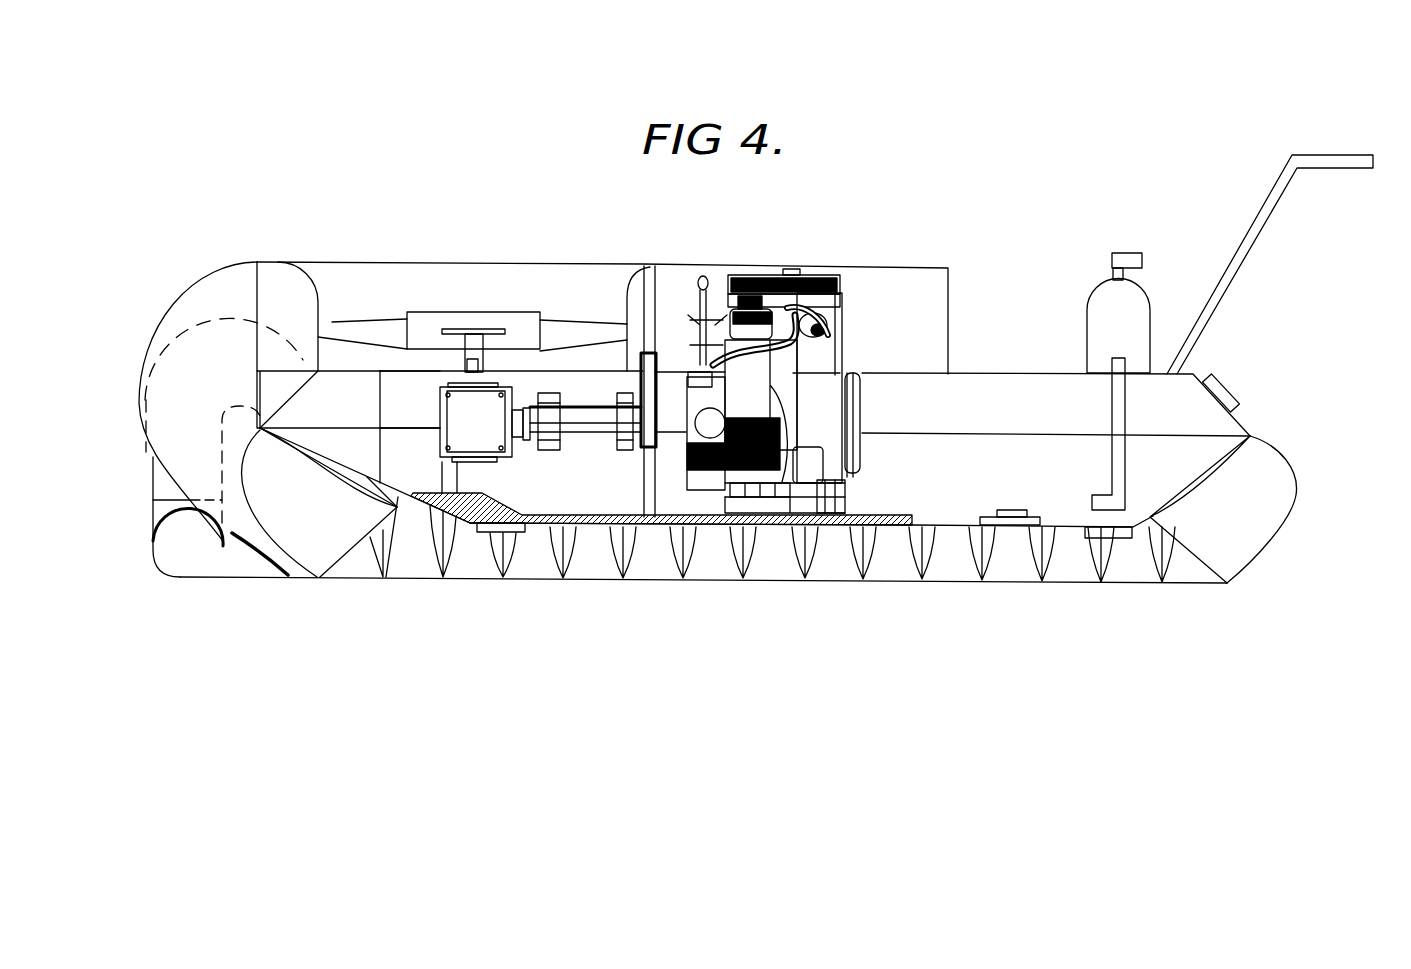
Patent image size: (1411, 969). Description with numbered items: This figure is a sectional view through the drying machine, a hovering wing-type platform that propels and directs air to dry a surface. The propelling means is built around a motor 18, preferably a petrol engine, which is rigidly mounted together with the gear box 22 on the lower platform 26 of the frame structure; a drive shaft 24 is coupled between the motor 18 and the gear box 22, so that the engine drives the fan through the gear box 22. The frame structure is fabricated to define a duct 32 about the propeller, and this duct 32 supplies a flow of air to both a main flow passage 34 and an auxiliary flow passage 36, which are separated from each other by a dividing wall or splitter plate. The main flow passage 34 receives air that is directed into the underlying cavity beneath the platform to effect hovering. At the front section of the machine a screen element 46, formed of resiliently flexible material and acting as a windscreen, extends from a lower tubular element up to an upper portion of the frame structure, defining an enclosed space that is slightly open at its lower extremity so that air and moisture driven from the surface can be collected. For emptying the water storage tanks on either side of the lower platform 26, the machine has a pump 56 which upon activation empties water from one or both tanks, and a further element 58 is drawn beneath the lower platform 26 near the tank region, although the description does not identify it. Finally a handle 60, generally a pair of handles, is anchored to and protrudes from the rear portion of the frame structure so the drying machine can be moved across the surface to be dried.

The motor 18 is at (843, 297).
The gear box 22 is at (482, 443).
The drive shaft 24 is at (603, 422).
The lower platform 26 is at (805, 578).
The duct 32 is at (605, 305).
The main flow passage 34 is at (430, 412).
The auxiliary flow passage 36 is at (355, 412).
The screen element 46 is at (177, 297).
The pump 56 is at (1125, 315).
The pump 58 is at (1005, 517).
The handle 60 is at (1328, 168).